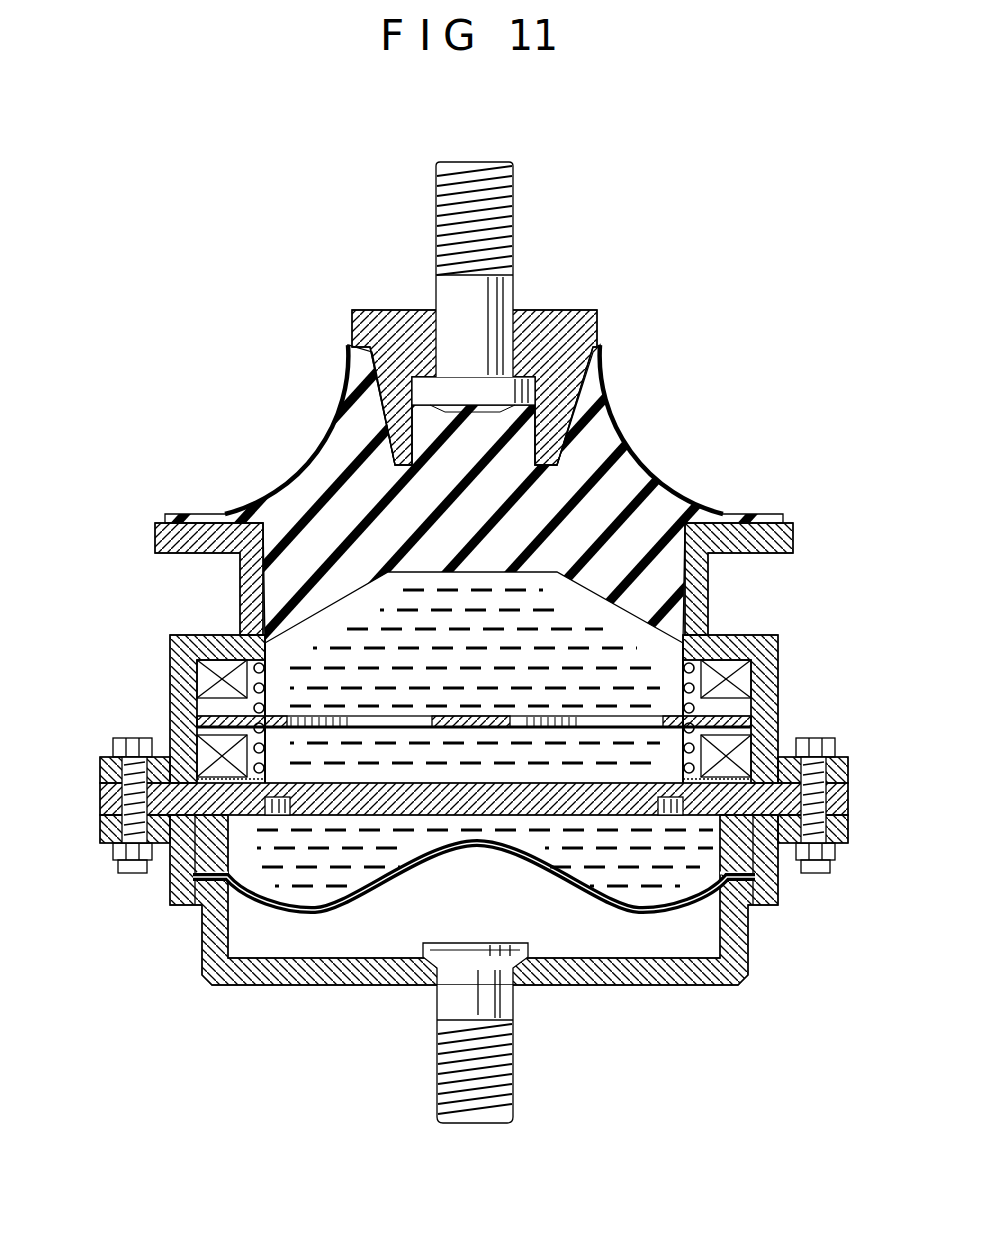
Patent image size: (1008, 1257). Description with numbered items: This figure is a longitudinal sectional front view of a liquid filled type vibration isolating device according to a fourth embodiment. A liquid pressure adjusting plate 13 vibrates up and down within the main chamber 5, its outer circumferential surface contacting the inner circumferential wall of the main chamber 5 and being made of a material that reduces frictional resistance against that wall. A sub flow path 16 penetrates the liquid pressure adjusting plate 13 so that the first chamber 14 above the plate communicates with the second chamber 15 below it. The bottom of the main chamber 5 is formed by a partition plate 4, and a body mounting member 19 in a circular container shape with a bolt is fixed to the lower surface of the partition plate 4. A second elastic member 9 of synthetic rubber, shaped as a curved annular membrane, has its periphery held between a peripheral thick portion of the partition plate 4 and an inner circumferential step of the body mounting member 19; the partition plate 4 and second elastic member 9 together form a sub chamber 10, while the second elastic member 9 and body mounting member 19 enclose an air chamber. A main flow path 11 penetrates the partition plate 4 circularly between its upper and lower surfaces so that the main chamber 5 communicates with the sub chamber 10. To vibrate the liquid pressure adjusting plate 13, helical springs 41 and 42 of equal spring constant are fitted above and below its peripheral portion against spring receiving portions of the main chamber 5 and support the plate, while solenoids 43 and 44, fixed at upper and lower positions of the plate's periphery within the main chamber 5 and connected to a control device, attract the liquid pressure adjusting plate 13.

The partition plate 4 is at (170, 797).
The main chamber 5 is at (412, 665).
The second elastic member 9 is at (355, 907).
The sub chamber 10 is at (648, 858).
The main flow path 11 is at (283, 815).
The liquid pressure adjusting plate 13 is at (409, 516).
The first chamber 14 is at (423, 602).
The second chamber 15 is at (412, 763).
The sub flow path 16 is at (582, 713).
The body mounting member 19 is at (571, 985).
The helical spring 41 is at (170, 636).
The helical spring 42 is at (195, 718).
The solenoid 43 is at (745, 670).
The solenoid 44 is at (745, 752).